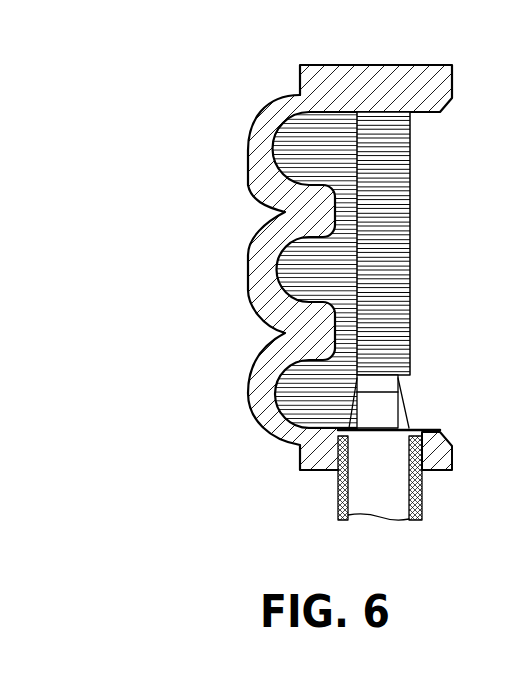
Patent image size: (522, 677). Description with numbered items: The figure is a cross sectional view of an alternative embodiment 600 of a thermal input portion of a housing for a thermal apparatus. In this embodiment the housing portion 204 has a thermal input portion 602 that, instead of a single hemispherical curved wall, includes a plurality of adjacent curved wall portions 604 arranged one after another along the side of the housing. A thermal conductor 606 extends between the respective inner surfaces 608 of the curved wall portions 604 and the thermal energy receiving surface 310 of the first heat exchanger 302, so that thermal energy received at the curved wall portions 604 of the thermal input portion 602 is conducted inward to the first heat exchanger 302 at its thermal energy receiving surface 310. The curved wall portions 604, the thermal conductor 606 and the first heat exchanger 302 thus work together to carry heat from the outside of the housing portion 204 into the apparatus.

The alternative embodiment 600 is at (139, 74).
The housing portion 204 is at (397, 73).
The thermal input portion 602 is at (227, 117).
The curved wall portions 604 is at (265, 370).
The thermal conductor 606 is at (298, 386).
The inner surfaces 608 is at (264, 172).
The first heat exchanger 302 is at (396, 298).
The thermal energy receiving surface 310 is at (349, 360).